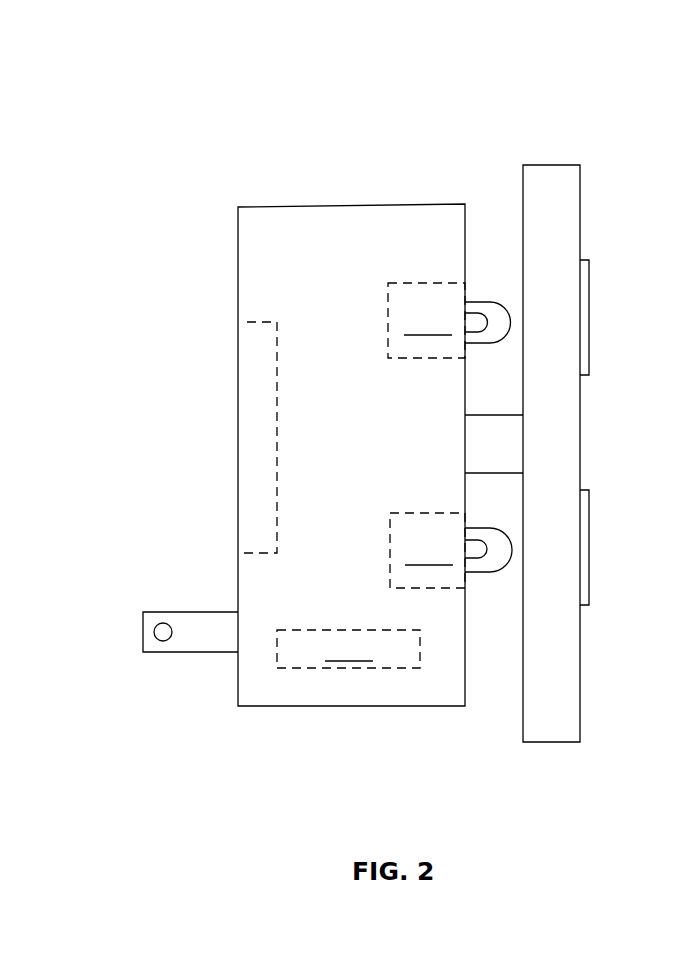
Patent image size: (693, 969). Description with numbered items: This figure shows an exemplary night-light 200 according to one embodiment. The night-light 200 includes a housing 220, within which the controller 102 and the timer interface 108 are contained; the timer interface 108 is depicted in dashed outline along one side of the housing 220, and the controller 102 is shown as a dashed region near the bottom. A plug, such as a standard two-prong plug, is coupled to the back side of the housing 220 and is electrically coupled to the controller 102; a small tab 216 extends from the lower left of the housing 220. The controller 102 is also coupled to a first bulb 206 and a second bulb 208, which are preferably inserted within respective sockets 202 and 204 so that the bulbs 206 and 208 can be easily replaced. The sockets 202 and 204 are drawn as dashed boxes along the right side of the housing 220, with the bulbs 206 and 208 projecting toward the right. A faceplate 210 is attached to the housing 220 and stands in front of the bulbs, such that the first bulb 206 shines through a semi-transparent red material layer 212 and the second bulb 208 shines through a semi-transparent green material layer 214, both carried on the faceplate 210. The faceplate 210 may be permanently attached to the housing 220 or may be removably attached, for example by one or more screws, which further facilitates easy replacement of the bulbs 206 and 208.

The night-light 200 is at (541, 97).
The housing 220 is at (290, 212).
The timer interface 108 is at (247, 423).
The socket 202 is at (426, 320).
The socket 204 is at (427, 550).
The controller 102 is at (348, 649).
The first bulb 206 is at (483, 300).
The second bulb 208 is at (480, 575).
The faceplate 210 is at (562, 434).
The semi-transparent red material layer 212 is at (585, 319).
The semi-transparent green material layer 214 is at (585, 567).
The mounting tab 216 is at (142, 621).